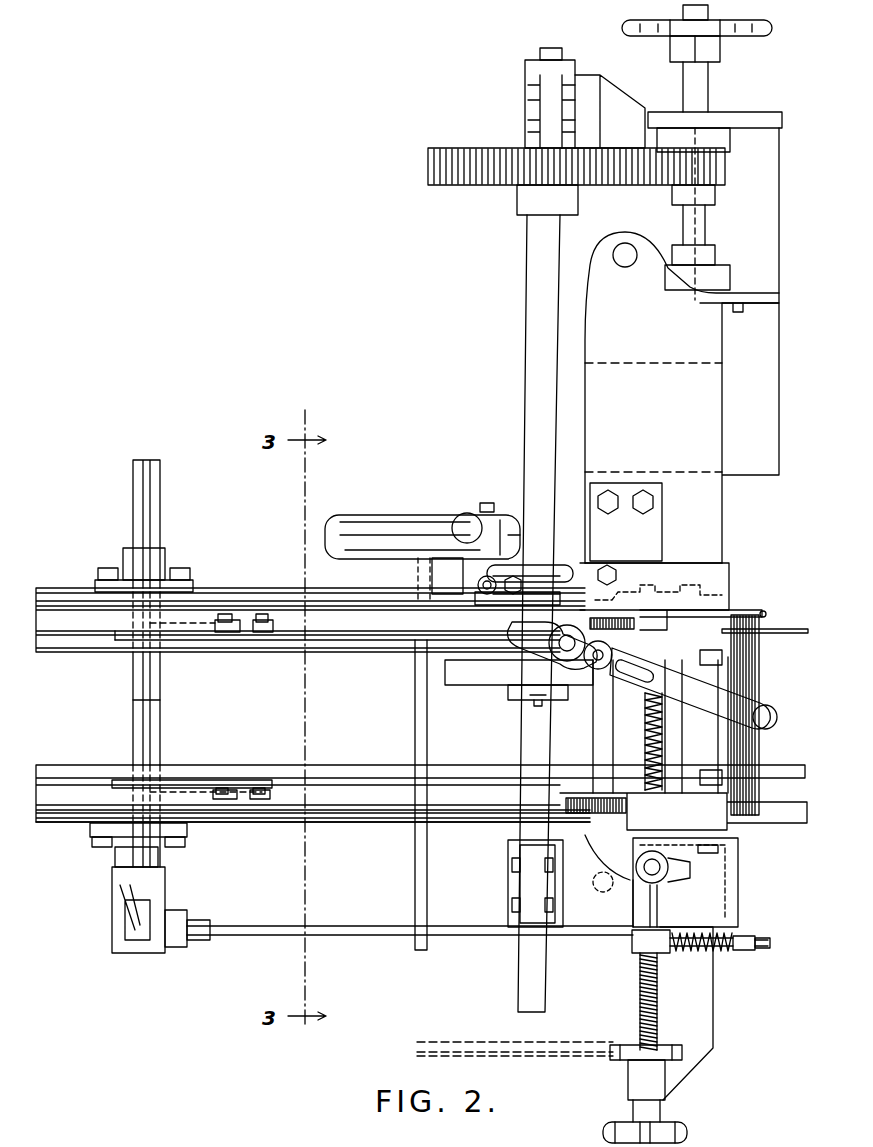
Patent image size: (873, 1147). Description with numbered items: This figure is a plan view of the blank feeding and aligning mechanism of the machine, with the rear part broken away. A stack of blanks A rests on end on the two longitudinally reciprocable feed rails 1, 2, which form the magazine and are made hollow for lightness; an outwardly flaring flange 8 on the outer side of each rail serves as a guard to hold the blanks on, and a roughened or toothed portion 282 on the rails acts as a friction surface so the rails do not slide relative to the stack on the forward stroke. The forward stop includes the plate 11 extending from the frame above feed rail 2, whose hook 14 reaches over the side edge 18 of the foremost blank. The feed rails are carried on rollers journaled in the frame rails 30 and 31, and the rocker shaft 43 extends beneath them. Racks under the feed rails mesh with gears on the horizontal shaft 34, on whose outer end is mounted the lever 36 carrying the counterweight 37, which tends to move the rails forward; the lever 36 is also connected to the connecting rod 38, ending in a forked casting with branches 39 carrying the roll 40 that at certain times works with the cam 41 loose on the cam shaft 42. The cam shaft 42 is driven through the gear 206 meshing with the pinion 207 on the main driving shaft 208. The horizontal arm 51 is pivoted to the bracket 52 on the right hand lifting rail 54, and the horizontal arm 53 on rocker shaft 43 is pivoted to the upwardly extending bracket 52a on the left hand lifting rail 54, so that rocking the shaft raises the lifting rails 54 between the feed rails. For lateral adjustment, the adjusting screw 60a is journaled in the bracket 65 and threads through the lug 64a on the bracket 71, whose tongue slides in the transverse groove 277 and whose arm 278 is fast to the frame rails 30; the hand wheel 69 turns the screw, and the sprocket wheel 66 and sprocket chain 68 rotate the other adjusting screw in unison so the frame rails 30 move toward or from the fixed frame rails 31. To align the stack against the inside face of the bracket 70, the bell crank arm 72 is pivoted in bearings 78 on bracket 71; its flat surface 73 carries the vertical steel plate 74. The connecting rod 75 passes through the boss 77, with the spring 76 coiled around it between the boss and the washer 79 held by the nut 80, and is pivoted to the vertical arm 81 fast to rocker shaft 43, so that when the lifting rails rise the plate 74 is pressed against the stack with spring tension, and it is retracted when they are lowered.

The feed rail 1 is at (346, 808).
The feed rail 2 is at (356, 626).
The outwardly flaring flange 8 is at (340, 614).
The plate 11 is at (746, 614).
The hook 14 is at (768, 629).
The side edge 18 is at (766, 612).
The frame rail 30 is at (396, 826).
The frame rail 31 is at (262, 600).
The horizontal shaft 34 is at (411, 718).
The lever 36 is at (385, 548).
The counterweight 37 is at (466, 515).
The connecting rod 38 is at (492, 602).
The branch 39 is at (592, 577).
The roll 40 is at (532, 590).
The cam 41 is at (600, 592).
The cam shaft 42 is at (537, 386).
The rocker shaft 43 is at (150, 713).
The horizontal arm 51 is at (212, 640).
The bracket 52 is at (262, 640).
The upwardly extending bracket 52a is at (256, 790).
The horizontal arm 53 is at (192, 790).
The lifting rail 54 is at (104, 630).
The adjusting screw 60a is at (640, 990).
The lug 64a is at (662, 872).
The bracket 65 is at (630, 1090).
The sprocket wheel 66 is at (670, 1052).
The sprocket chain 68 is at (457, 1046).
The hand wheel 69 is at (686, 1130).
The bracket 70 is at (680, 596).
The bracket 71 is at (641, 836).
The bell crank arm 72 is at (632, 903).
The flat surface 73 is at (548, 858).
The steel plate 74 is at (576, 798).
The connecting rod 75 is at (366, 936).
The spring 76 is at (706, 951).
The boss 77 is at (658, 956).
The bearing 78 is at (660, 878).
The washer 79 is at (736, 950).
The nut 80 is at (746, 935).
The vertical arm 81 is at (118, 930).
The gear 206 is at (488, 176).
The pinion 207 is at (730, 182).
The main driving shaft 208 is at (700, 226).
The transverse groove 277 is at (676, 725).
The arm 278 is at (603, 798).
The roughened or toothed portion 282 is at (666, 614).
The stack of blanks A is at (752, 676).